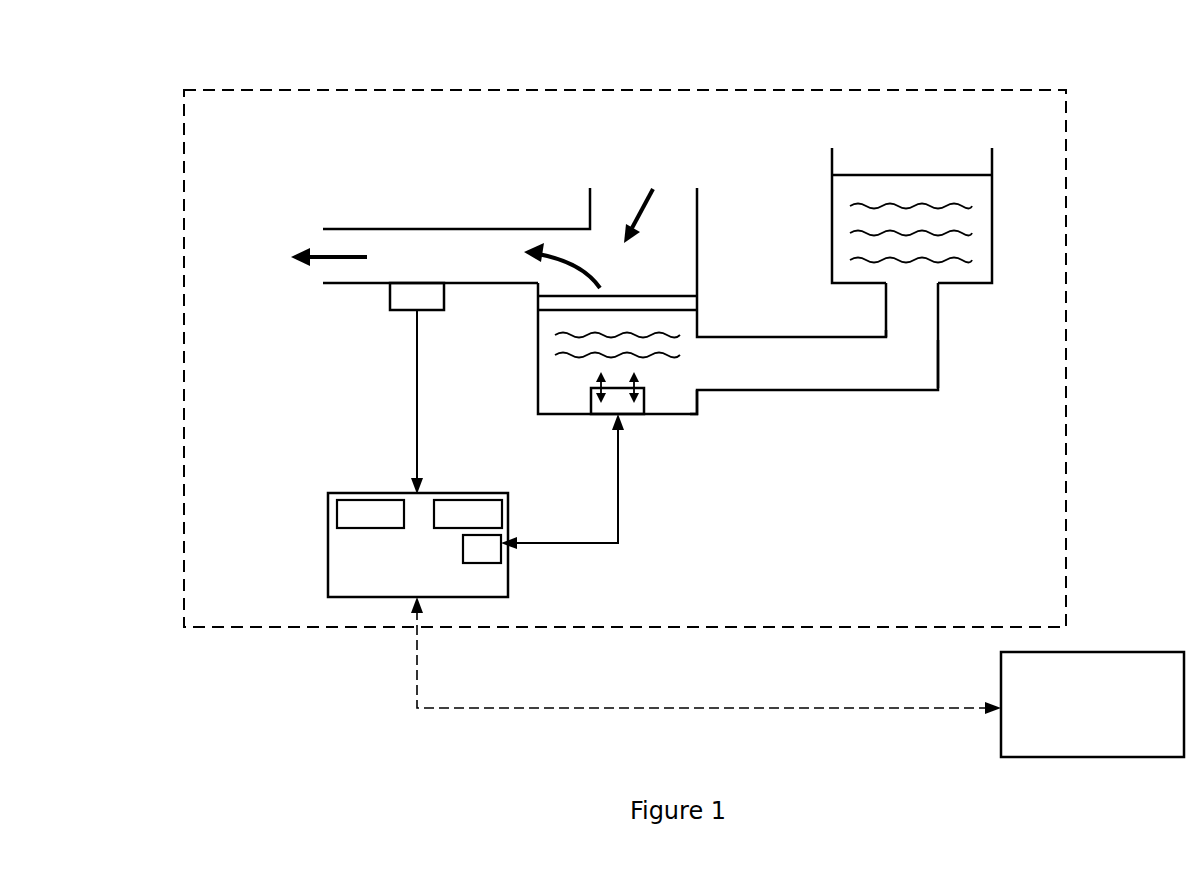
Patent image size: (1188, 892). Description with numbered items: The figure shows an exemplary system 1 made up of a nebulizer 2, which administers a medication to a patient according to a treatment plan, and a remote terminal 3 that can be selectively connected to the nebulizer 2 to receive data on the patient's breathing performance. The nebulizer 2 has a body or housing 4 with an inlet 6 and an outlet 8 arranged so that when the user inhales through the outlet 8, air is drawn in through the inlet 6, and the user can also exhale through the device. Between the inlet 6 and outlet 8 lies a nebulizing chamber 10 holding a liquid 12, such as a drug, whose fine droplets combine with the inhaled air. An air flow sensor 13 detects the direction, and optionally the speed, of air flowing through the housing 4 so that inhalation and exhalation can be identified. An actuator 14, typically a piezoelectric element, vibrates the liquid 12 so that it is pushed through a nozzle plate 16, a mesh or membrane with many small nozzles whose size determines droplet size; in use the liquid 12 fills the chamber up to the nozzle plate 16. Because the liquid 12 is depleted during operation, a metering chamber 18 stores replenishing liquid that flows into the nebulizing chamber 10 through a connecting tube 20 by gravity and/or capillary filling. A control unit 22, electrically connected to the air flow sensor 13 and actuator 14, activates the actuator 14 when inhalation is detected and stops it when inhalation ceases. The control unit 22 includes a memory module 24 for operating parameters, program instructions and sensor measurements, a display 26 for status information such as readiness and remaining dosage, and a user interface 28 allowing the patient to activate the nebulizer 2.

The system 1 is at (138, 106).
The nebulizer 2 is at (215, 83).
The remote terminal 3 is at (1001, 735).
The housing 4 is at (537, 229).
The inlet 6 is at (607, 186).
The outlet 8 is at (305, 233).
The nebulizing chamber 10 is at (538, 360).
The liquid 12 is at (686, 410).
The air flow sensor 13 is at (390, 304).
The actuator 14 is at (628, 408).
The nozzle plate 16 is at (538, 303).
The metering chamber 18 is at (965, 285).
The connecting tube 20 is at (912, 392).
The control unit 22 is at (328, 512).
The memory module 24 is at (488, 500).
The display 26 is at (350, 500).
The user interface 28 is at (501, 560).